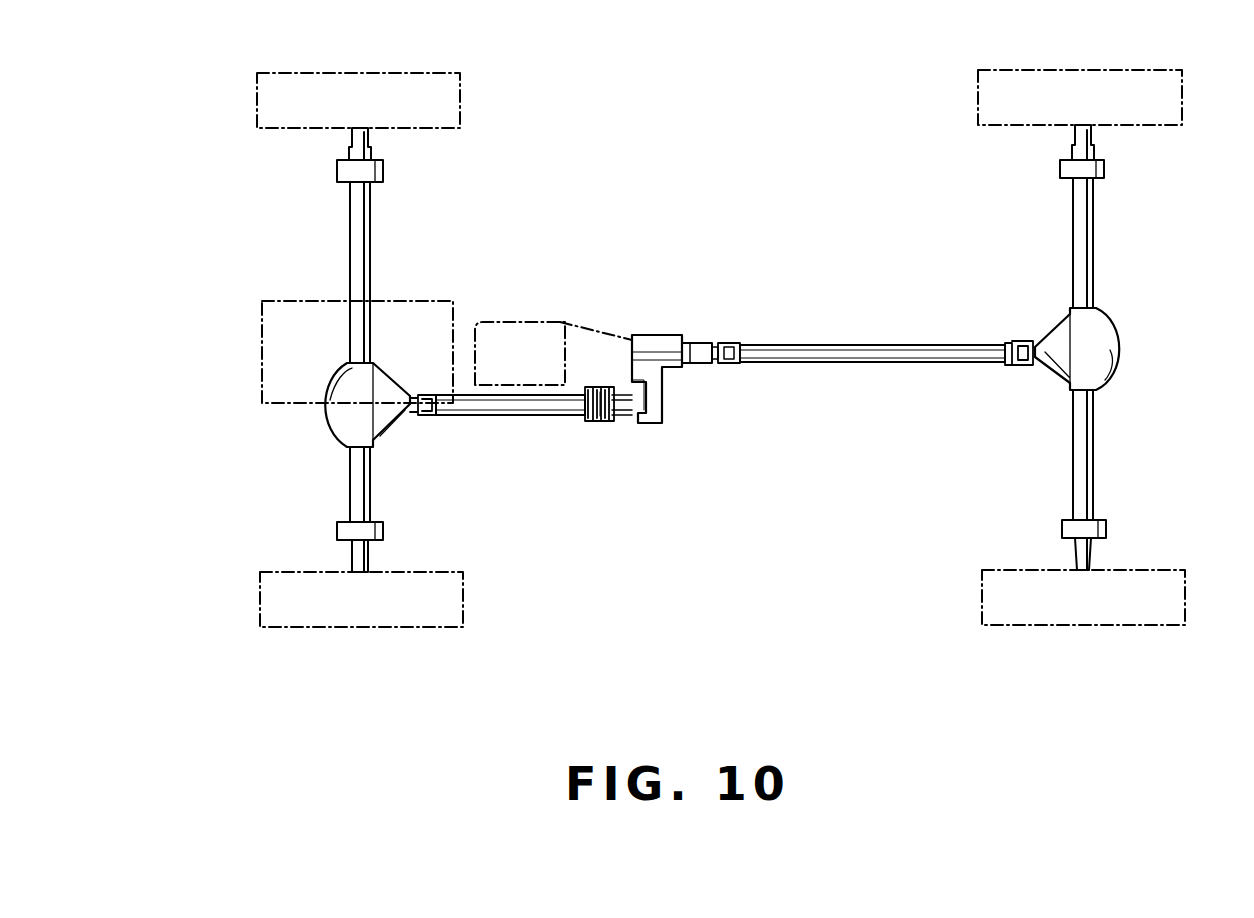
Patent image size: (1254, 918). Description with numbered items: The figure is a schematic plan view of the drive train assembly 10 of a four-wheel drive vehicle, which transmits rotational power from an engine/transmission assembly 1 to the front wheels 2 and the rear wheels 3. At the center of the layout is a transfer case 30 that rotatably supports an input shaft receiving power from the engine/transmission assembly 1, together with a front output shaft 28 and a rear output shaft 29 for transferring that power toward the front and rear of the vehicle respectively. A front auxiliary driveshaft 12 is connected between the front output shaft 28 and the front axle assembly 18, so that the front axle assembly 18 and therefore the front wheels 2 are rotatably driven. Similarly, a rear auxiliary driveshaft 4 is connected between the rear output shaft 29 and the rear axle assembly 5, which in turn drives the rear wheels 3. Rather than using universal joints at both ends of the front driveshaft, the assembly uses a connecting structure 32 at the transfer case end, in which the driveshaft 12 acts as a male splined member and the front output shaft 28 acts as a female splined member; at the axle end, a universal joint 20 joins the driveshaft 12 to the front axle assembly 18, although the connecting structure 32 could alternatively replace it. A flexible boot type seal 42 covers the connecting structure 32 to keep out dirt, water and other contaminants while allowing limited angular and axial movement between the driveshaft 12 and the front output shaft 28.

The engine/transmission assembly 1 is at (277, 312).
The front wheels 2 is at (450, 92).
The rear wheels 3 is at (995, 93).
The rear auxiliary driveshaft 4 is at (905, 356).
The rear axle assembly 5 is at (1108, 345).
The drive train assembly 10 is at (700, 212).
The front auxiliary driveshaft 12 is at (540, 415).
The front axle assembly 18 is at (340, 420).
The universal joint 20 is at (425, 430).
The front output shaft 28 is at (613, 393).
The rear output shaft 29 is at (702, 362).
The transfer case 30 is at (660, 345).
The connecting structure 32 is at (610, 432).
The seal 42 is at (600, 388).